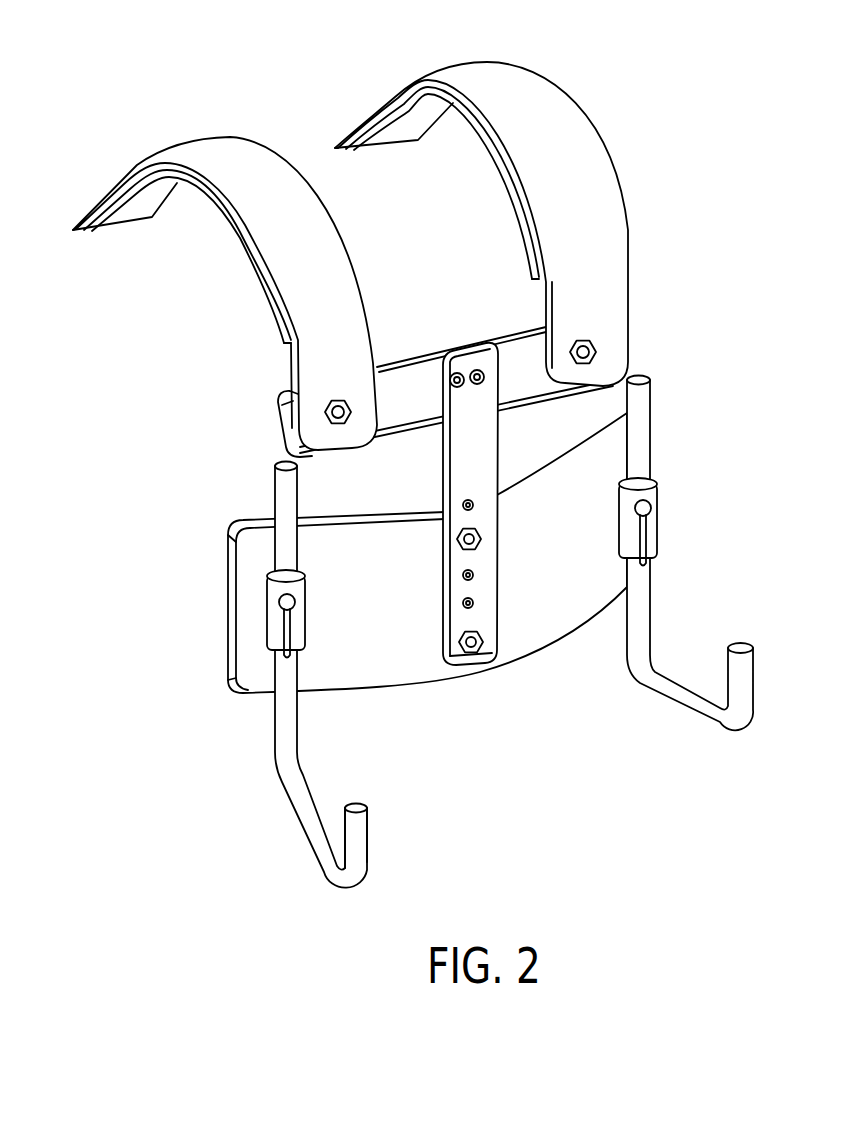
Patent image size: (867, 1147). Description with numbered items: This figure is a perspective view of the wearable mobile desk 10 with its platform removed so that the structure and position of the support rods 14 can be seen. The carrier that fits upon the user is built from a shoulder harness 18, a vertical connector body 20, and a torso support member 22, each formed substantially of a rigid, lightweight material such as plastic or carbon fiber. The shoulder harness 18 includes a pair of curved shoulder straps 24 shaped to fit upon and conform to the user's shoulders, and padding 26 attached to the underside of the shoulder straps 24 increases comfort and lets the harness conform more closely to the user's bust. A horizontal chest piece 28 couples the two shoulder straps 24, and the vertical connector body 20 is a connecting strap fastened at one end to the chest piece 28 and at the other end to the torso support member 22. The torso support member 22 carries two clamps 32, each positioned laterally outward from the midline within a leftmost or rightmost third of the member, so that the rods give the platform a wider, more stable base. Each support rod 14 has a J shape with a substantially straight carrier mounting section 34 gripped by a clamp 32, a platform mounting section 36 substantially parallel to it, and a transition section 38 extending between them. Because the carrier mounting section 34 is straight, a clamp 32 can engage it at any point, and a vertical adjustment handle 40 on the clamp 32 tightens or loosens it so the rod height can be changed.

The mobile desk 10 is at (105, 82).
The support rod 14 is at (441, 553).
The shoulder harness 18 is at (422, 256).
The vertical connector body 20 is at (500, 446).
The torso support member 22 is at (228, 588).
The curved shoulder strap 24 is at (487, 224).
The padding 26 is at (522, 199).
The horizontal chest piece 28 is at (406, 358).
The clamp 32 is at (496, 563).
The carrier mounting section 34 is at (482, 632).
The platform mounting section 36 is at (368, 847).
The transition section 38 is at (292, 827).
The vertical adjustment handle 40 is at (652, 538).